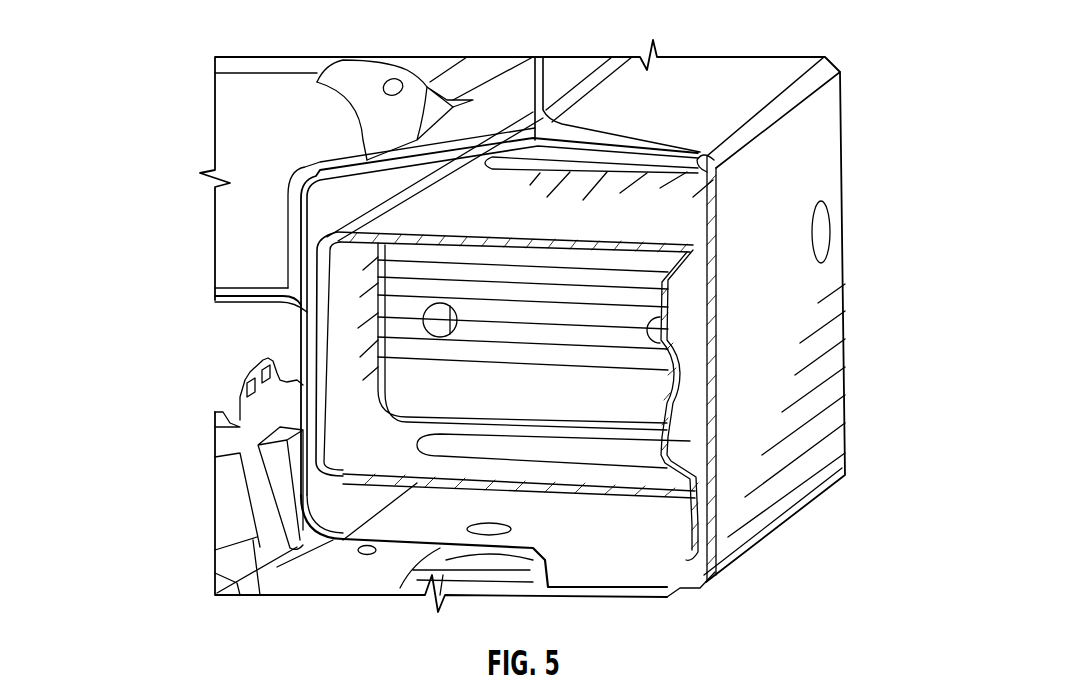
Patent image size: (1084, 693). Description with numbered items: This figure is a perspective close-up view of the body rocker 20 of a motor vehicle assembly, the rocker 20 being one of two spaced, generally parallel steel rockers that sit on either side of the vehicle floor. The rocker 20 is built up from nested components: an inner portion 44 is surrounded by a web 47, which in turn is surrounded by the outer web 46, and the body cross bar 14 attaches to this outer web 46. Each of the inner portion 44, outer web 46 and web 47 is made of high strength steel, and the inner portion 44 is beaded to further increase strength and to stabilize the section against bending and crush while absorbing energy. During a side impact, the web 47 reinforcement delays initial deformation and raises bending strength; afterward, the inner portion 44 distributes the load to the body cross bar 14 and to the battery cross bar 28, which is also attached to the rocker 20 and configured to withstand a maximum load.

The body cross bar 14 is at (267, 67).
The rocker 20 is at (658, 390).
The battery cross bar 28 is at (223, 518).
The inner portion 44 is at (667, 310).
The outer web 46 is at (720, 77).
The web 47 is at (377, 462).